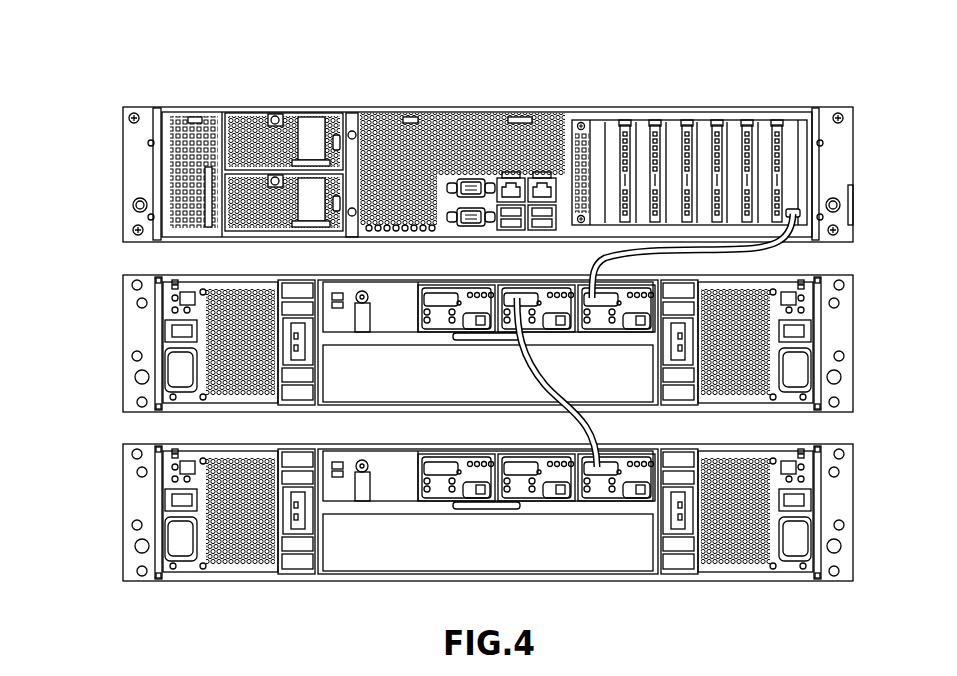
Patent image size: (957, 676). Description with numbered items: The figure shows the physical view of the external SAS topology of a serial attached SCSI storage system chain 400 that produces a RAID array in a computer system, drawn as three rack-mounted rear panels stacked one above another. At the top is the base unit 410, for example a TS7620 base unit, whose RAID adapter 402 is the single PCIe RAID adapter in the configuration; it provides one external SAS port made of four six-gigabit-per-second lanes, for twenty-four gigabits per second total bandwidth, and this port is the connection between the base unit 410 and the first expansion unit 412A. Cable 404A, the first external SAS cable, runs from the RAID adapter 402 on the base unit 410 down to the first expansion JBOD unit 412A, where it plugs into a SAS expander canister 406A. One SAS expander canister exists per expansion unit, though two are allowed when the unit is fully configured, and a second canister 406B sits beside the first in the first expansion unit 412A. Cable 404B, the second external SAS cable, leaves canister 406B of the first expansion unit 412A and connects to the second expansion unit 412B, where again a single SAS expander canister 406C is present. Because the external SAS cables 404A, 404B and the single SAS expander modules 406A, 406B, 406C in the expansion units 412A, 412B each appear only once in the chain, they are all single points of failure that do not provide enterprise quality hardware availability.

The SAS storage system chain 400 is at (165, 67).
The RAID adapter 402 is at (789, 130).
The cable 1 404A is at (748, 246).
The cable 2 404B is at (527, 378).
The SAS expander canister 406A is at (578, 290).
The SAS expander canister 406B is at (497, 290).
The SAS expander canister 406C is at (606, 466).
The base unit 410 is at (133, 185).
The first expansion unit 412A is at (133, 334).
The second expansion unit 412B is at (133, 506).